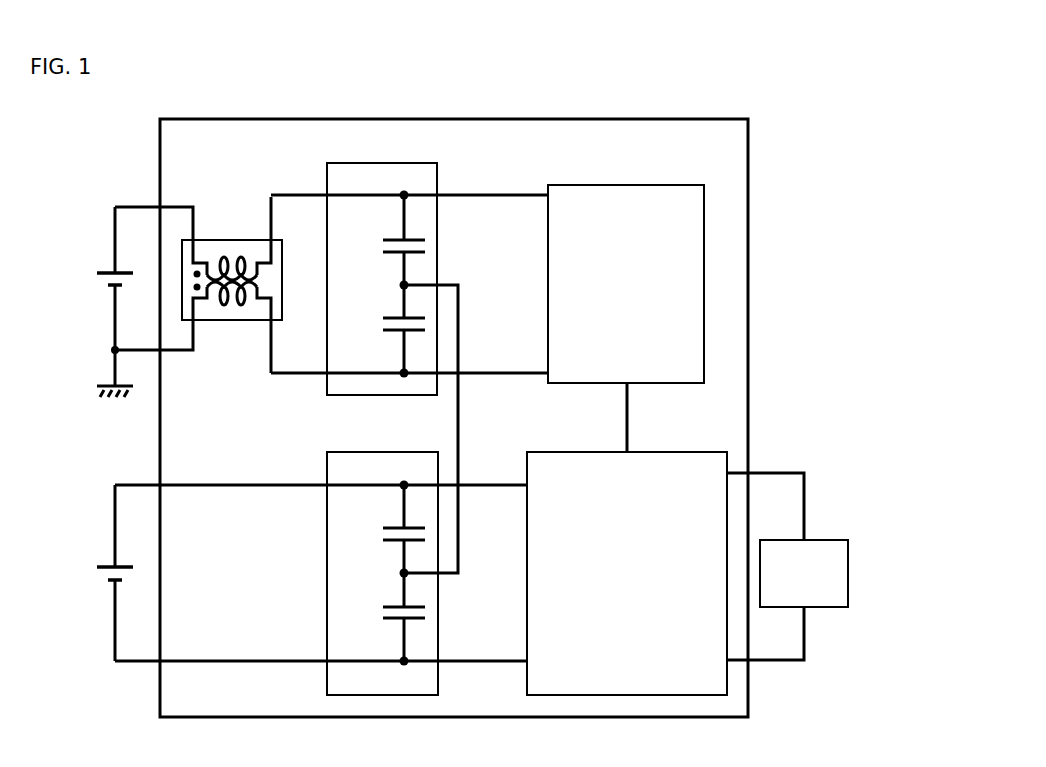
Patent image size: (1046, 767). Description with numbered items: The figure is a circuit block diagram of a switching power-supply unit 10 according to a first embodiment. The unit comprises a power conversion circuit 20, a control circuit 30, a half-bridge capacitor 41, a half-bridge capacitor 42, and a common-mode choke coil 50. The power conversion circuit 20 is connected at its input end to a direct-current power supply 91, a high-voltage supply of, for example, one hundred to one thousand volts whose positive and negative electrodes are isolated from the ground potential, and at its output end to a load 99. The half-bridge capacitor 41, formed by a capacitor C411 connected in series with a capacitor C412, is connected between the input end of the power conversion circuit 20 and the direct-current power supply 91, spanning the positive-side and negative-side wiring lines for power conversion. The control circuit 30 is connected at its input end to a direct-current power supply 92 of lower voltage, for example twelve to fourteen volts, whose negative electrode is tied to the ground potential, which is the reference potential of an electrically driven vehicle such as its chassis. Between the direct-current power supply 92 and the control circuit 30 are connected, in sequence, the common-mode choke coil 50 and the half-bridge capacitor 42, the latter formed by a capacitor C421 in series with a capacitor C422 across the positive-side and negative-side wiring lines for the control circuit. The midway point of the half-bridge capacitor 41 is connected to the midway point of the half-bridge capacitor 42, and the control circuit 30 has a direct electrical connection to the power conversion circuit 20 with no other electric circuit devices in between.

The switching power-supply unit 10 is at (716, 118).
The power conversion circuit 20 is at (692, 450).
The control circuit 30 is at (672, 184).
The half-bridge capacitor 41 is at (385, 557).
The half-bridge capacitor 42 is at (385, 262).
The common-mode choke coil 50 is at (236, 240).
The direct-current power supply 91 is at (110, 589).
The direct-current power supply 92 is at (108, 266).
The load 99 is at (828, 538).
The capacitor C411 is at (386, 529).
The capacitor C412 is at (386, 617).
The capacitor C421 is at (386, 240).
The capacitor C422 is at (386, 329).